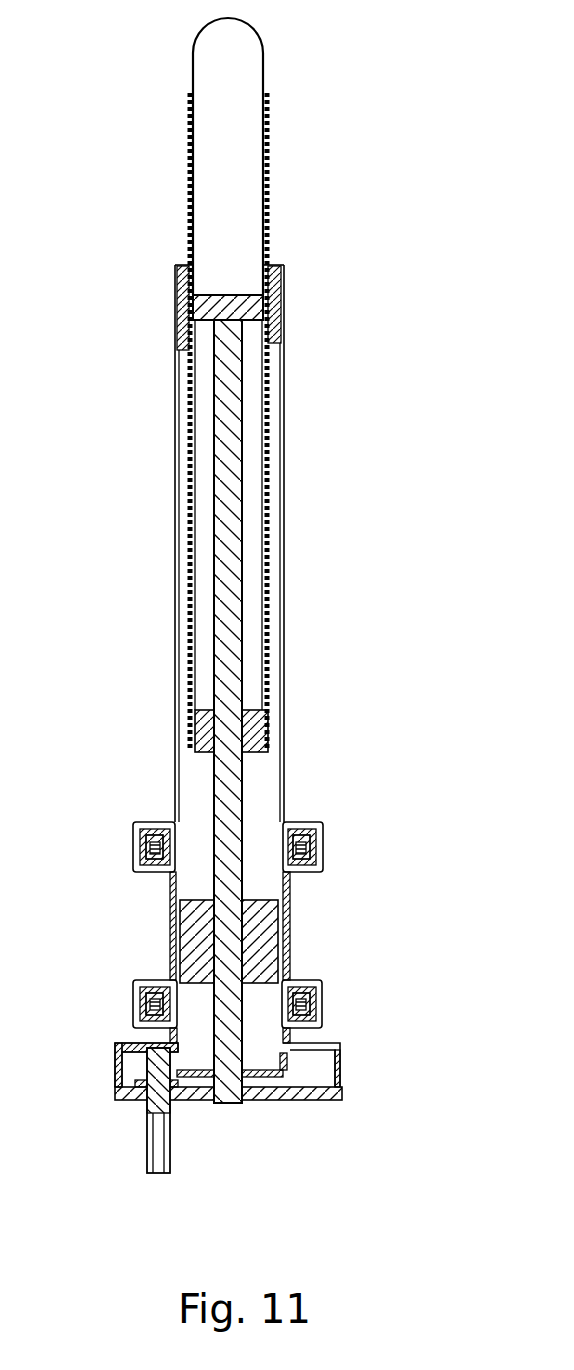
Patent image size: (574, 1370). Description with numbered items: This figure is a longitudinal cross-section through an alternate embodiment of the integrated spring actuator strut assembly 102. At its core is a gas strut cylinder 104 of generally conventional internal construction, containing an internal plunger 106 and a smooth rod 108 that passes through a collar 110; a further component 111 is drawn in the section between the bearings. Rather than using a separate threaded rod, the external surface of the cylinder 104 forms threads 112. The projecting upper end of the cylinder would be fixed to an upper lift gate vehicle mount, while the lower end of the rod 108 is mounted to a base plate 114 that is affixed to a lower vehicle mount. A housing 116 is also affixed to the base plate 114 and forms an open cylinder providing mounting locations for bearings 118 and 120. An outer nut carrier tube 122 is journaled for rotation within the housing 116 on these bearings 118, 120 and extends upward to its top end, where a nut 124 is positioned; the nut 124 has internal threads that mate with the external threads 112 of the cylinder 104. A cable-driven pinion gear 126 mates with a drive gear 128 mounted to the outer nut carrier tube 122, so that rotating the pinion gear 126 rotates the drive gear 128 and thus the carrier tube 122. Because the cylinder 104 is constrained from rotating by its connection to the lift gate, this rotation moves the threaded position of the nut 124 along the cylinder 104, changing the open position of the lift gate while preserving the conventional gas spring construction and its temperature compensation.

The integrated spring actuator strut assembly 102 is at (160, 453).
The gas strut cylinder 104 is at (248, 207).
The internal plunger 106 is at (233, 290).
The smooth rod 108 is at (243, 782).
The collar 110 is at (268, 722).
The guide block 111 is at (268, 922).
The threads 112 is at (268, 133).
The base plate 114 is at (260, 1101).
The housing 116 is at (341, 1070).
The bearing 118 is at (320, 1002).
The bearing 120 is at (323, 850).
The outer nut carrier tube 122 is at (283, 363).
The nut 124 is at (280, 308).
The pinion gear 126 is at (118, 1043).
The drive gear 128 is at (290, 1067).